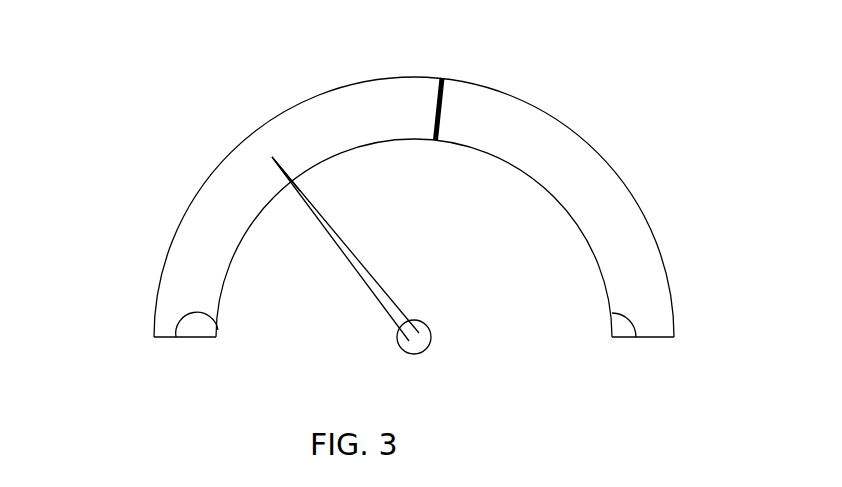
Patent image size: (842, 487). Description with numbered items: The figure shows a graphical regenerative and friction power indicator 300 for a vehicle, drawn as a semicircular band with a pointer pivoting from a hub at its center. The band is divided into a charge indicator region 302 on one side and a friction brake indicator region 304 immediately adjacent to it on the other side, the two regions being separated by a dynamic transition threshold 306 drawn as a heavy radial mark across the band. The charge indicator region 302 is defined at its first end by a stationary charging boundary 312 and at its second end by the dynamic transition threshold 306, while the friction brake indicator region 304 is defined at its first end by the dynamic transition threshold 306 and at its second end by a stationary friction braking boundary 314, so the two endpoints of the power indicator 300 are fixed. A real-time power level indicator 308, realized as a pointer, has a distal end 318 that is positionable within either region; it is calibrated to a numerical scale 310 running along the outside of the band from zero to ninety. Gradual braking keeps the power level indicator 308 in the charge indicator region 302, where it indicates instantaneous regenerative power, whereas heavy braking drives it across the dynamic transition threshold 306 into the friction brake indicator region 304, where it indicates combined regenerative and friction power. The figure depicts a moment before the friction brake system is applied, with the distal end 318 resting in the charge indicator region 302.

The power indicator 300 is at (184, 90).
The charge indicator region 302 is at (197, 214).
The friction brake indicator region 304 is at (603, 200).
The dynamic transition threshold 306 is at (445, 106).
The real-time power level indicator 308 is at (352, 248).
The numerical scale 310 is at (131, 358).
The stationary charging boundary 312 is at (218, 330).
The stationary friction braking boundary 314 is at (612, 313).
The distal end 318 is at (276, 150).